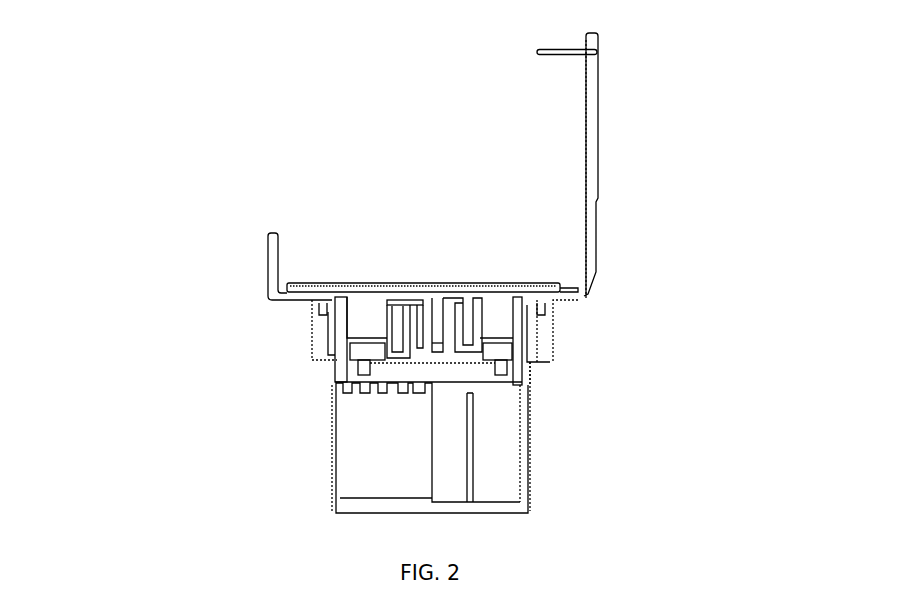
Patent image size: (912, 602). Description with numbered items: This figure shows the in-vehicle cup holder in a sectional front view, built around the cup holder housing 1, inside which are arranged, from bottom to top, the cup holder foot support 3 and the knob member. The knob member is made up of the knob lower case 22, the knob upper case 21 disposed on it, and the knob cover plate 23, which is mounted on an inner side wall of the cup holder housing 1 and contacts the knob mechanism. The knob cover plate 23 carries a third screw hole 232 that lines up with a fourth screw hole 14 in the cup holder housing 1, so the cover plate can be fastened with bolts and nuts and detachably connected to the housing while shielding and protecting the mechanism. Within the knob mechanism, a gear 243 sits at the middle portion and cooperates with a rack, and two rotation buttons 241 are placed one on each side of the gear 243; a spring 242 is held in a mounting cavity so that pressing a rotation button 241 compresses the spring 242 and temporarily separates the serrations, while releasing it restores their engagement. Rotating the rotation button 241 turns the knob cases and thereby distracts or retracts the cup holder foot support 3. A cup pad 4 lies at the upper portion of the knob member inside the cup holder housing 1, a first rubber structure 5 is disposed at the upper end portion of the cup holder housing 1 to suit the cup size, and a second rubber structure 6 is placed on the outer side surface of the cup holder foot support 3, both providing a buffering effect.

The cup holder housing 1 is at (713, 165).
The cup holder foot support 3 is at (358, 420).
The cup pad 4 is at (590, 290).
The first rubber structure 5 is at (600, 52).
The second rubber structure 6 is at (332, 467).
The fourth screw hole 14 is at (330, 330).
The knob upper case 21 is at (438, 310).
The knob lower case 22 is at (281, 346).
The knob cover plate 23 is at (527, 317).
The third screw hole 232 is at (330, 298).
The rotation button 241 is at (387, 308).
The spring 242 is at (700, 334).
The gear 243 is at (427, 348).